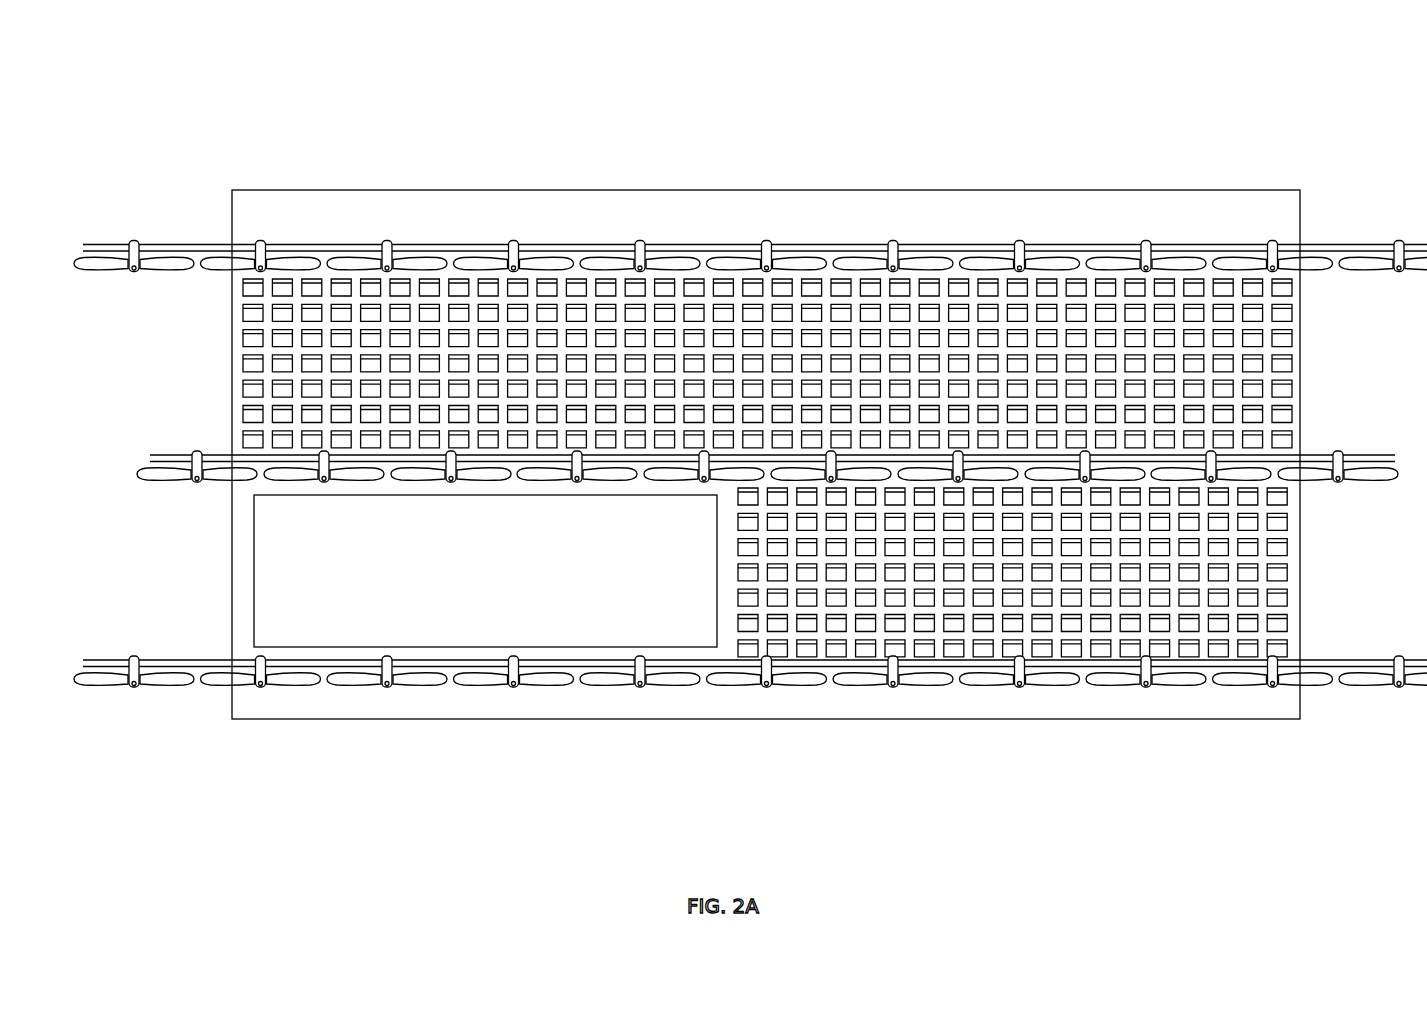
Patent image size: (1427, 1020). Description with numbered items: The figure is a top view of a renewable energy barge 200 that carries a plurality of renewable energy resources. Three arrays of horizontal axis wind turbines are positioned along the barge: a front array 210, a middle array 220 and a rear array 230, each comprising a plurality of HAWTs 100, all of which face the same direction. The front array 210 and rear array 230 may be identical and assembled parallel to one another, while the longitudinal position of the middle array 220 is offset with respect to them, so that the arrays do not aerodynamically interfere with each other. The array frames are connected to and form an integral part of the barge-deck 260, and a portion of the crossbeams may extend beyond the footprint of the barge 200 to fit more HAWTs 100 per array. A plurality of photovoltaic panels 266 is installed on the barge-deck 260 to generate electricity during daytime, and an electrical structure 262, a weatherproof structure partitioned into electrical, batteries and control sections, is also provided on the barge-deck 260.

The renewable energy barge 200 is at (1340, 96).
The barge-deck 260 is at (747, 190).
The electrical structure 262 is at (254, 550).
The photovoltaic panels 266 is at (233, 328).
The rear array 230 is at (165, 233).
The middle array 220 is at (186, 434).
The front array 210 is at (165, 646).
The horizontal axis wind turbine 100 is at (512, 240).